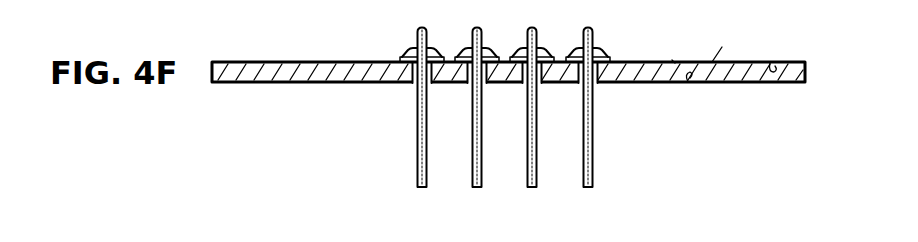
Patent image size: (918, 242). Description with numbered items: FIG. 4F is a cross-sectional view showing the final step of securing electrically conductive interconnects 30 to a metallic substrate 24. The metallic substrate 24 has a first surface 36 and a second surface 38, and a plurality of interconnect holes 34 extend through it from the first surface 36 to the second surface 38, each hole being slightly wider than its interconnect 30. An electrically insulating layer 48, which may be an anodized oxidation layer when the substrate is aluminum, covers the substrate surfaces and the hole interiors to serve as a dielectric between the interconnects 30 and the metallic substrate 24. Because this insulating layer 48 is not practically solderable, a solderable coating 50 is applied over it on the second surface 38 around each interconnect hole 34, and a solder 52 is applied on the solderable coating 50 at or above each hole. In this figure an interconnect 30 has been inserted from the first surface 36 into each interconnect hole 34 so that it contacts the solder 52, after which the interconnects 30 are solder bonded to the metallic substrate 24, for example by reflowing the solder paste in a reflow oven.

The metallic substrate 24 is at (808, 70).
The electrically conductive interconnect 30 is at (427, 152).
The interconnect hole 34 is at (415, 86).
The first surface 36 is at (688, 82).
The second surface 38 is at (770, 63).
The electrically insulating layer 48 is at (729, 44).
The solderable coating 50 is at (683, 45).
The solder 52 is at (435, 47).